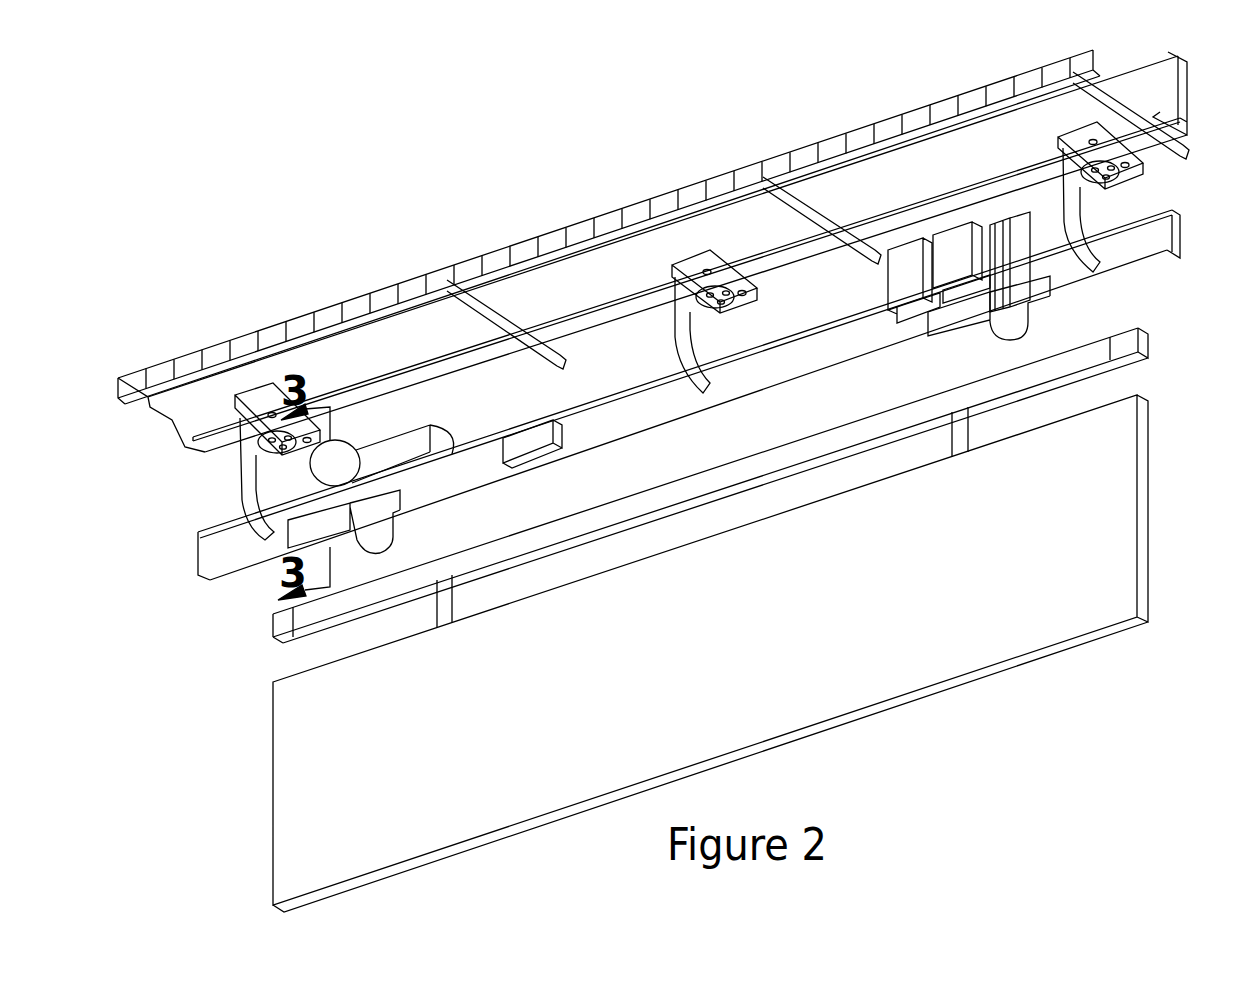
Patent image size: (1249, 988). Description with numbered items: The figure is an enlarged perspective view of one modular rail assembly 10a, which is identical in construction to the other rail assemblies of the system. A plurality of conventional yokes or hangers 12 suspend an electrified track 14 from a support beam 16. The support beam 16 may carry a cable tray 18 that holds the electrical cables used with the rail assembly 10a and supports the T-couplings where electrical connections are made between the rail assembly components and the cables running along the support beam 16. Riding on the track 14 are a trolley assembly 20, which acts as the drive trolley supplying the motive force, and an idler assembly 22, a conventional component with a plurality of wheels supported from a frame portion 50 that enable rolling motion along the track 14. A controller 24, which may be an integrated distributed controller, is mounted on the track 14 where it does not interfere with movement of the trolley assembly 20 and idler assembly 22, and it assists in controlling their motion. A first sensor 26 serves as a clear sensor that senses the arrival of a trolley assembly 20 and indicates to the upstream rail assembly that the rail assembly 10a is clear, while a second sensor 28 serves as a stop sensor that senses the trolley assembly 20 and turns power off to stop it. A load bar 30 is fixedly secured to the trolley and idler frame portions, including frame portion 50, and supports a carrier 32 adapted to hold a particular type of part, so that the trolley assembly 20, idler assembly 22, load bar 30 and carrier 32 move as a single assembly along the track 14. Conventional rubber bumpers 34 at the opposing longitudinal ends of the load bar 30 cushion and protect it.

The rail assembly 10a is at (185, 548).
The hangers 12 is at (247, 490).
The electrified track 14 is at (1173, 260).
The support beam 16 is at (1177, 92).
The cable tray 18 is at (915, 110).
The trolley assembly 20 is at (365, 438).
The idler assembly 22 is at (1020, 232).
The controller 24 is at (905, 272).
The first sensor 26 is at (530, 442).
The second sensor 28 is at (300, 534).
The load bar 30 is at (543, 537).
The carrier 32 is at (508, 808).
The rubber bumpers 34 is at (273, 628).
The frame portion 50 is at (948, 345).